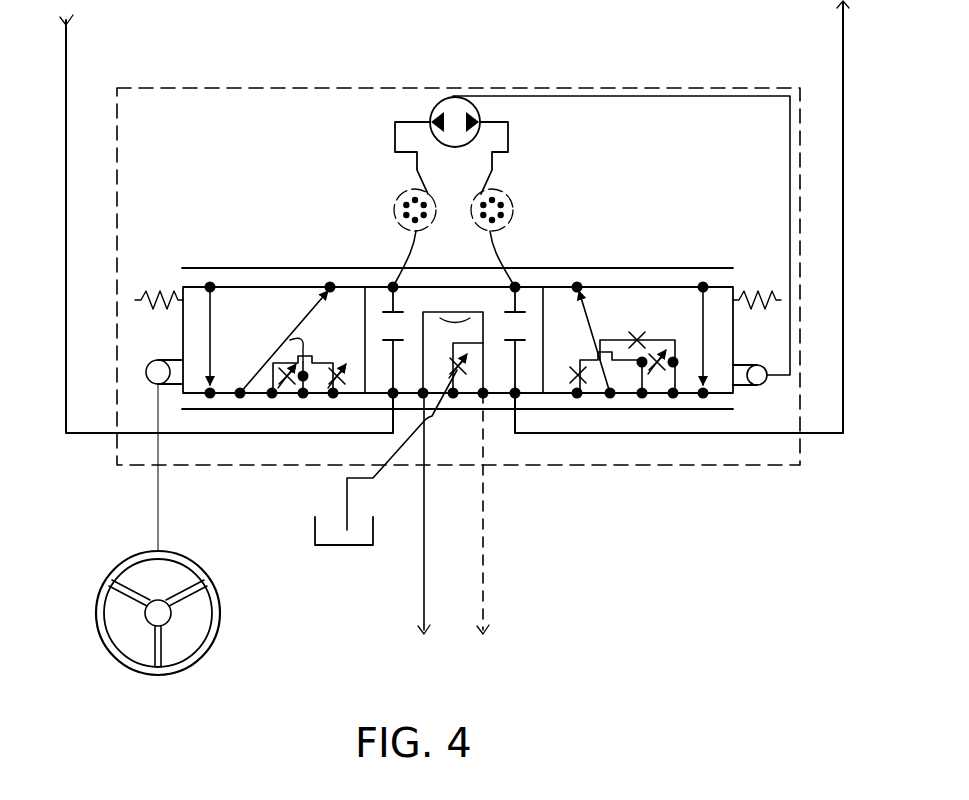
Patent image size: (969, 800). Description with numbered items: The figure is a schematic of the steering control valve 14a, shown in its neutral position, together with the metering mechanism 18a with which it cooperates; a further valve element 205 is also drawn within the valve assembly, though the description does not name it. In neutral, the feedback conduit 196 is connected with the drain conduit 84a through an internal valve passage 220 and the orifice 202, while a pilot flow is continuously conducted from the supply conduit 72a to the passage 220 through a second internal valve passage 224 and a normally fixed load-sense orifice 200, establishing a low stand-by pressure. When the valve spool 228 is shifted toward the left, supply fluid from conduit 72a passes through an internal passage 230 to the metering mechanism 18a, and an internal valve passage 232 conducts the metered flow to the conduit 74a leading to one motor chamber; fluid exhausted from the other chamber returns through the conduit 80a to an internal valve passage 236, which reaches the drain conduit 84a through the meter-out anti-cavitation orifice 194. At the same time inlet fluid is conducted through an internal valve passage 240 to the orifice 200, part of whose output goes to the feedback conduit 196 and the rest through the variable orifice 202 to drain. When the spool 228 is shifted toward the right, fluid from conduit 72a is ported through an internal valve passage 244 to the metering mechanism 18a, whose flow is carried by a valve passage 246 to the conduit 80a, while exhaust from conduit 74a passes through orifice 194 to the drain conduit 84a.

The steering control valve 14a is at (794, 38).
The conduit 80a is at (66, 58).
The conduit 74a is at (843, 42).
The metering mechanism 18a is at (522, 166).
The valve spool 228 is at (737, 283).
The valve passage 246 is at (210, 332).
The internal valve passage 244 is at (290, 338).
The meter-out anti-cavitation orifice 194 is at (343, 376).
The load-sense orifice 200 is at (303, 348).
The orifice 202 is at (287, 382).
The second internal valve passage 224 is at (423, 340).
The internal valve passage 220 is at (452, 343).
The relief valve 205 is at (483, 264).
The internal passage 230 is at (640, 266).
The internal valve passage 232 is at (710, 341).
The internal valve passage 240 is at (600, 338).
The internal valve passage 236 is at (576, 382).
The drain conduit 84a is at (384, 470).
The supply conduit 72a is at (424, 584).
The feedback conduit 196 is at (484, 500).